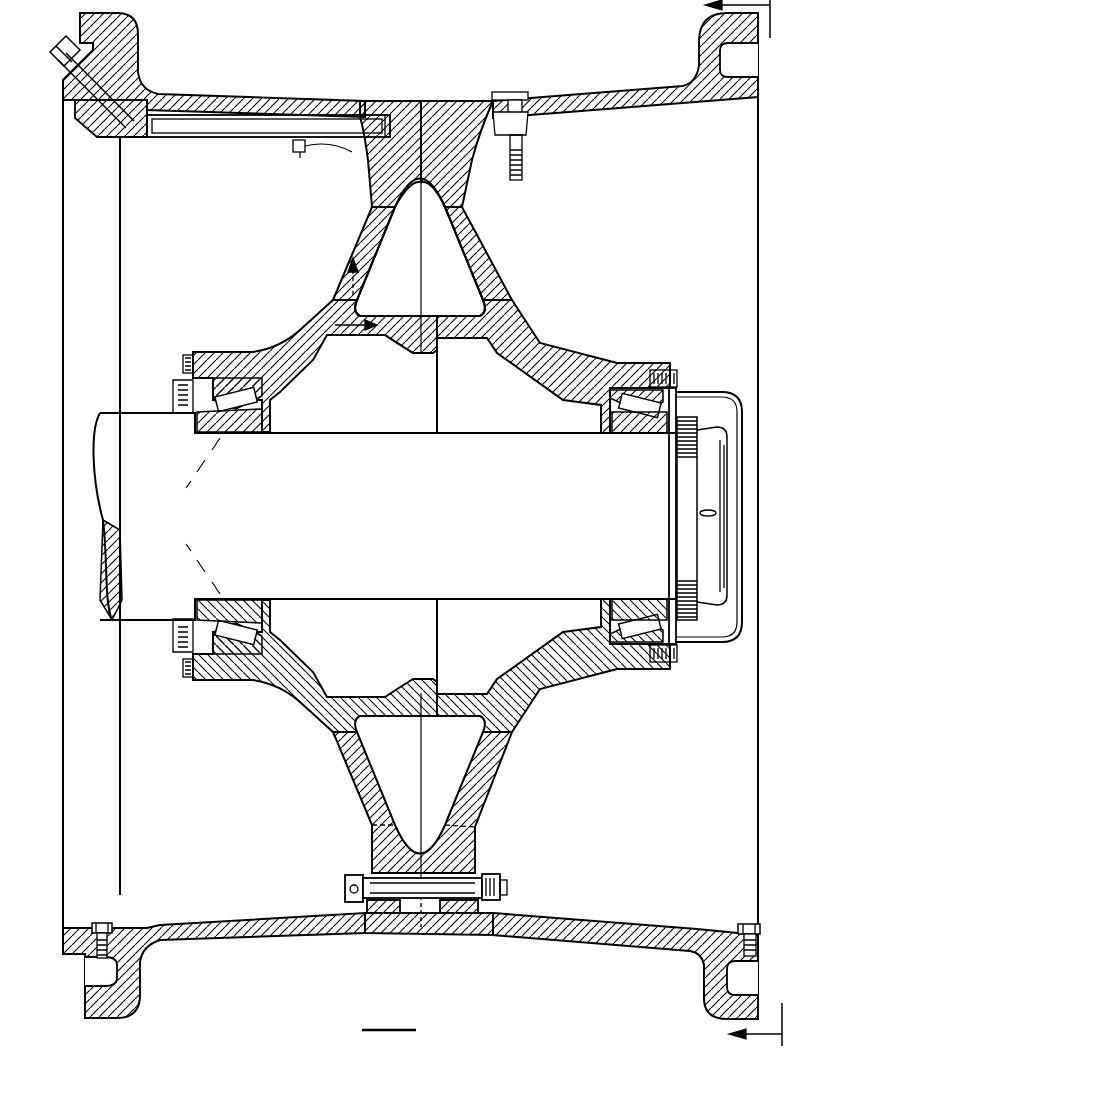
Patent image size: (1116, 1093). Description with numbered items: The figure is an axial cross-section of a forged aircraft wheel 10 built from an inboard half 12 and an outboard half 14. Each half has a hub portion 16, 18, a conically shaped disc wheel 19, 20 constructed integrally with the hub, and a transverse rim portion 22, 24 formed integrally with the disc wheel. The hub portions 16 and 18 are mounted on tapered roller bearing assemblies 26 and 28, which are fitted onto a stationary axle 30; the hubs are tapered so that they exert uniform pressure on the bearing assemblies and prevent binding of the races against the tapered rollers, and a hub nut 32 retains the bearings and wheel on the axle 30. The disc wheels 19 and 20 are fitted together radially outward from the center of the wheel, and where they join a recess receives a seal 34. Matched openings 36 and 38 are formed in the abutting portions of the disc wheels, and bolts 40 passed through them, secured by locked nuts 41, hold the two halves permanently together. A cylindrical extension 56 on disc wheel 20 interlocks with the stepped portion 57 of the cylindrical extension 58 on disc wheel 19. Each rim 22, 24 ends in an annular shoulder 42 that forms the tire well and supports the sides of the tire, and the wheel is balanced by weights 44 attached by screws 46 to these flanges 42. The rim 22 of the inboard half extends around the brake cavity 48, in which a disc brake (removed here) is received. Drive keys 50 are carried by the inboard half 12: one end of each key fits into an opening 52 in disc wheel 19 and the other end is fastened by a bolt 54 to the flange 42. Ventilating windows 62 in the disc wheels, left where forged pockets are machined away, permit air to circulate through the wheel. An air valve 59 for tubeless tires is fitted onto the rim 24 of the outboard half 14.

The aircraft wheel 10 is at (326, 80).
The inboard half 12 is at (362, 168).
The outboard half 14 is at (473, 185).
The hub portion 16 is at (225, 347).
The hub portion 18 is at (620, 362).
The disc wheel 19 is at (377, 200).
The disc wheel 20 is at (470, 198).
The rim portion 22 is at (255, 97).
The rim portion 24 is at (585, 96).
The tapered roller bearing assembly 26 is at (228, 433).
The tapered roller bearing assembly 28 is at (635, 433).
The stationary axle 30 is at (345, 452).
The hub nut 32 is at (700, 600).
The seal 34 is at (406, 196).
The opening 36 is at (378, 905).
The opening 38 is at (455, 905).
The bolt 40 is at (347, 878).
The locked nut 41 is at (492, 874).
The annular shoulder 42 is at (135, 1005).
The weight 44 is at (118, 935).
The screw 46 is at (104, 925).
The brake cavity 48 is at (150, 740).
The drive key 50 is at (165, 122).
The opening 52 is at (352, 112).
The bolt 54 is at (98, 115).
The cylindrical extension 56 is at (447, 316).
The stepped portion 57 is at (450, 343).
The cylindrical extension 58 is at (413, 355).
The air valve 59 is at (525, 148).
The ventilating window 62 is at (337, 300).